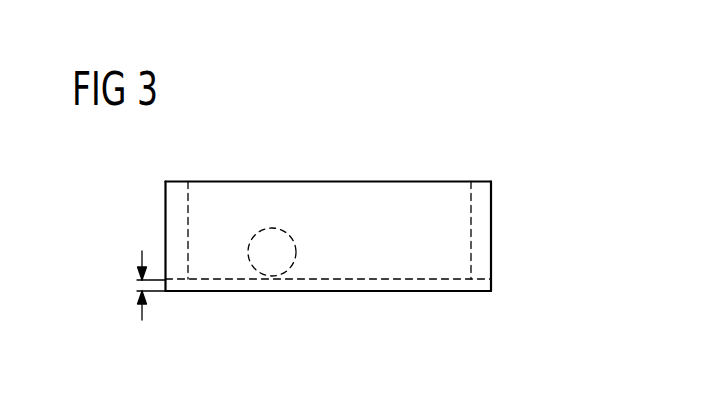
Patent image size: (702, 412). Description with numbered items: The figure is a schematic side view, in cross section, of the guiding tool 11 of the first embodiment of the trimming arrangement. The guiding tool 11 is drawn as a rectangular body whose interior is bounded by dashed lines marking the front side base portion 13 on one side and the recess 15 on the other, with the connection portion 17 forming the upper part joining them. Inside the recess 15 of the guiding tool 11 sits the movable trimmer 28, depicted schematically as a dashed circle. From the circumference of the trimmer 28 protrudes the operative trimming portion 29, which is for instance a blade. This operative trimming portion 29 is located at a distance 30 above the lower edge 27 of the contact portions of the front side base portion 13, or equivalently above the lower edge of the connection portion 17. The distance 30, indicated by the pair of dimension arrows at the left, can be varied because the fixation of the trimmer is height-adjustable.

The guiding tool 11 is at (333, 180).
The front side base portion 13 is at (177, 193).
The recess 15 is at (447, 225).
The connection portion 17 is at (401, 203).
The lower edge 27 is at (415, 293).
The trimmer 28 is at (267, 255).
The operative trimming portion 29 is at (277, 268).
The distance 30 is at (141, 285).